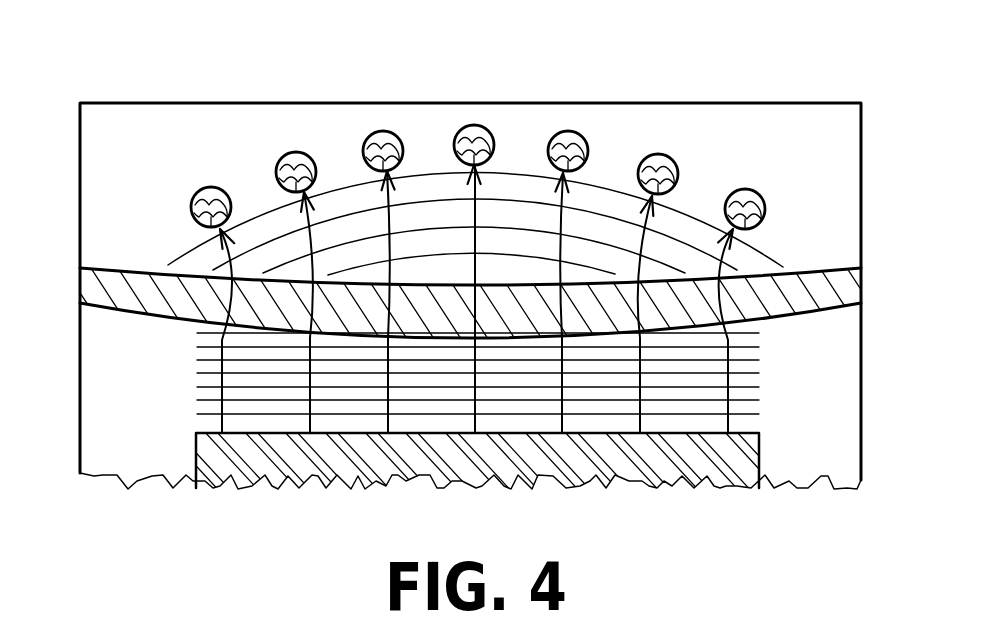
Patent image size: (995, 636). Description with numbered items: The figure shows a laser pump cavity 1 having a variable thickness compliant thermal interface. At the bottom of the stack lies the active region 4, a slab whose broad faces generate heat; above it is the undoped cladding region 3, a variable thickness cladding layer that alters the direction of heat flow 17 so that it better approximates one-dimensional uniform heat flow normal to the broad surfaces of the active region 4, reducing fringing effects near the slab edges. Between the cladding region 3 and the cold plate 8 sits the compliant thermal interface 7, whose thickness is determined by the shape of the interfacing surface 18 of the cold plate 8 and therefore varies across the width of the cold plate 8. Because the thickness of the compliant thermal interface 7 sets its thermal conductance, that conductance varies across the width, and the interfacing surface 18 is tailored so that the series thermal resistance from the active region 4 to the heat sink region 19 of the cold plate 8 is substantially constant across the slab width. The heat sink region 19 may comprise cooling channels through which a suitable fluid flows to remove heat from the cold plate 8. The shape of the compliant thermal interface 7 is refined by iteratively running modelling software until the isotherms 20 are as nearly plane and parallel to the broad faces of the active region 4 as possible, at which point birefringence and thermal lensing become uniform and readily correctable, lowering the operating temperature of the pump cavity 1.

The pump cavity 1 is at (457, 30).
The undoped cladding region 3 is at (123, 375).
The active region 4 is at (702, 455).
The compliant thermal interface 7 is at (93, 282).
The cold plate 8 is at (673, 122).
The heat flow 17 is at (306, 236).
The interfacing surface 18 is at (140, 272).
The heat sink region 19 is at (748, 190).
The isotherms 20 is at (737, 361).